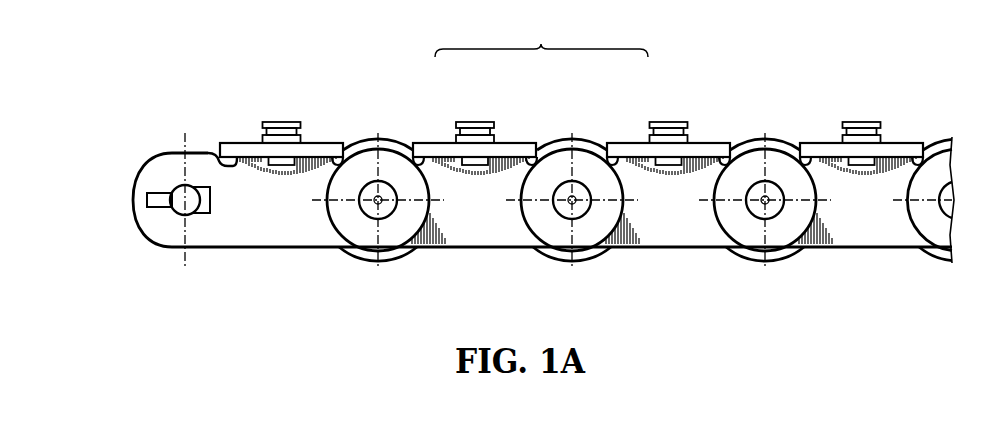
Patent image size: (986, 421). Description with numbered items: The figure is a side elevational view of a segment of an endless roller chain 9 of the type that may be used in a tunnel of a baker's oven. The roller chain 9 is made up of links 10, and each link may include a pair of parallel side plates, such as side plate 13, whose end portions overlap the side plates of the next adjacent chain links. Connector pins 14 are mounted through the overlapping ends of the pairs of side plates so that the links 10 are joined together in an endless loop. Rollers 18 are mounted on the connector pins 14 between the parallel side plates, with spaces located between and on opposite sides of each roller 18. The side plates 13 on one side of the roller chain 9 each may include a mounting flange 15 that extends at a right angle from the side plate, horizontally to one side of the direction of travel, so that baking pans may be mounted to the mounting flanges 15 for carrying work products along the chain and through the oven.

The endless roller chain 9 is at (541, 39).
The links 10 is at (509, 205).
The side plate 13 is at (222, 238).
The connector pins 14 is at (173, 212).
The mounting flange 15 is at (428, 143).
The rollers 18 is at (385, 260).